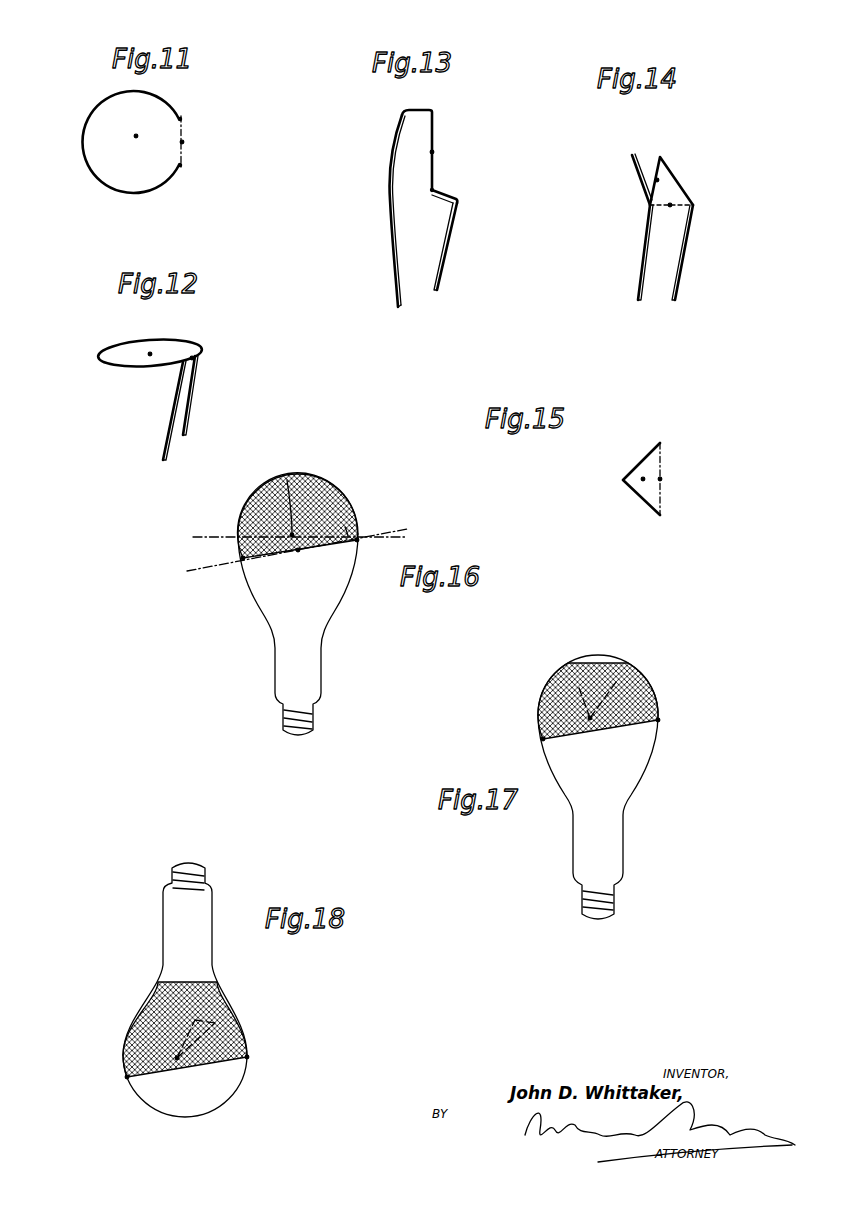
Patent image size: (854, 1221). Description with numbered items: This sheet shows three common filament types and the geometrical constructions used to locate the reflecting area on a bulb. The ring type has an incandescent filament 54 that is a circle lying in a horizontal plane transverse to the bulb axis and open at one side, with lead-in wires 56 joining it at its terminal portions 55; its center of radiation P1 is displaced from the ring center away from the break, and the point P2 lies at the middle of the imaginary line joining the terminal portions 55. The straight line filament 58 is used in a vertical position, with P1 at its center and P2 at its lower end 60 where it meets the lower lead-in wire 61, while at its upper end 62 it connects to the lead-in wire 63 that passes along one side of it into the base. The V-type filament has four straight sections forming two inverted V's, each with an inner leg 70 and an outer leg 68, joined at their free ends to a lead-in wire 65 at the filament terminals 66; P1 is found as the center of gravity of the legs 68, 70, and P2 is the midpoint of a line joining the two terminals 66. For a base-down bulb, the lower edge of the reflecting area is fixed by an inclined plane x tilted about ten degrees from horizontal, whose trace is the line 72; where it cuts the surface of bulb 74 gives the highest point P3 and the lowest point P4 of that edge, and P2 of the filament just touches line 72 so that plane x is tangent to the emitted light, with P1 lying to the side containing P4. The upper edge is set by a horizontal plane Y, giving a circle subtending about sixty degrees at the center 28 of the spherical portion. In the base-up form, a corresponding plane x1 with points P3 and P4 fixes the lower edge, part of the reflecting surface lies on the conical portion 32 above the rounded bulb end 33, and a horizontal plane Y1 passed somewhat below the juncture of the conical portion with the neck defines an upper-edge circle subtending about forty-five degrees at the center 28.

In FIG. 11, the incandescent filament 54 is at (96, 168).
In FIG. 12, the incandescent filament 54 is at (110, 342).
In FIG. 11, the terminal portions 55 is at (182, 119).
In FIG. 12, the terminal portions 55 is at (200, 350).
In FIG. 12, the lead-in wires 56 is at (198, 400).
In FIG. 13, the straight line filament 58 is at (433, 130).
In FIG. 13, the lower end 60 is at (429, 195).
In FIG. 13, the lower lead-in wire 61 is at (448, 267).
In FIG. 13, the upper end 62 is at (432, 110).
In FIG. 13, the lead-in wire 63 is at (390, 176).
In FIG. 14, the lead-in wire 65 is at (640, 280).
In FIG. 14, the filament terminals 66 is at (648, 205).
In FIG. 15, the filament terminals 66 is at (665, 440).
In FIG. 14, the outer leg 68 is at (680, 170).
In FIG. 15, the outer leg 68 is at (658, 444).
In FIG. 14, the inner leg 70 is at (603, 174).
In FIG. 15, the inner leg 70 is at (612, 478).
In FIG. 16, the line 72 is at (273, 558).
In FIG. 16, the bulb 74 is at (287, 480).
In FIG. 17, the center 28 is at (655, 700).
In FIG. 18, the center 28 is at (232, 1045).
In FIG. 18, the conical portion 32 is at (145, 1003).
In FIG. 18, the bulb bottom 33 is at (186, 1117).
In FIG. 11, the center of radiation P1 is at (136, 136).
In FIG. 13, the center of radiation P1 is at (434, 152).
In FIG. 14, the center of radiation P1 is at (660, 180).
In FIG. 12, the center of radiation P1 is at (148, 354).
In FIG. 16, the center of radiation P1 is at (292, 535).
In FIG. 15, the center of radiation P1 is at (645, 479).
In FIG. 17, the center of radiation P1 is at (590, 718).
In FIG. 18, the center of radiation P1 is at (177, 1058).
In FIG. 11, the filament limit point P2 is at (184, 142).
In FIG. 13, the filament limit point P2 is at (434, 189).
In FIG. 14, the filament limit point P2 is at (670, 208).
In FIG. 12, the filament limit point P2 is at (196, 360).
In FIG. 16, the filament limit point P2 is at (298, 551).
In FIG. 15, the filament limit point P2 is at (663, 480).
In FIG. 16, the highest point of lower edge P3 is at (358, 542).
In FIG. 17, the highest point of lower edge P3 is at (659, 722).
In FIG. 18, the highest point of lower edge P3 is at (248, 1058).
In FIG. 16, the lowest point of lower edge P4 is at (243, 558).
In FIG. 17, the lowest point of lower edge P4 is at (543, 739).
In FIG. 18, the lowest point of lower edge P4 is at (127, 1077).
In FIG. 16, the inclined plane x is at (295, 550).
In FIG. 17, the inclined plane x is at (610, 725).
In FIG. 18, the inclined plane x1 is at (212, 1066).
In FIG. 17, the horizontal plane Y is at (585, 664).
In FIG. 18, the horizontal plane Y1 is at (178, 982).